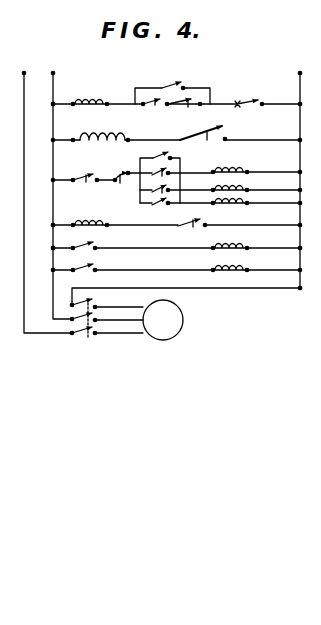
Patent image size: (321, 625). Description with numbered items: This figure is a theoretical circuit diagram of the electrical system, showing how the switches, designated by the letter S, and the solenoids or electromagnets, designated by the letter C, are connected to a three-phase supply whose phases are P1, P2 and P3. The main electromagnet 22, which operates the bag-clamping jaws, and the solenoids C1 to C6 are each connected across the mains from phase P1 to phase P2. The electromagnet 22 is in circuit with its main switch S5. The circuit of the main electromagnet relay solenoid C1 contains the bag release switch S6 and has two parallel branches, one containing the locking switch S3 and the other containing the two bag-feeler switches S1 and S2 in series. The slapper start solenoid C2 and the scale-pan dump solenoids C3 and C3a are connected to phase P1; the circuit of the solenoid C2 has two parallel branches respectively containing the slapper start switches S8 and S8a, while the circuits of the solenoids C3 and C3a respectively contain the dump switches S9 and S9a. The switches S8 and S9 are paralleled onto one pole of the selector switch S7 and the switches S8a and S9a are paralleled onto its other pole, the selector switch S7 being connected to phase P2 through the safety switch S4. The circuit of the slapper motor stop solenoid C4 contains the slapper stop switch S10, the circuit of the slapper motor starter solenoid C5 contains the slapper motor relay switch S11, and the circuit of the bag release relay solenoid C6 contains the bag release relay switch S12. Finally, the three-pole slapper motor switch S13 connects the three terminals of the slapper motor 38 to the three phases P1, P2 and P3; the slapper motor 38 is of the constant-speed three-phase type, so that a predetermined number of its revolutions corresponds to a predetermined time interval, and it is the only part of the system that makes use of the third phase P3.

The main electromagnet 22 is at (98, 130).
The slapper motor 38 is at (180, 328).
The first phase P1 is at (300, 172).
The second phase P2 is at (60, 188).
The third phase P3 is at (44, 195).
The main electromagnet relay solenoid C1 is at (90, 95).
The slapper start solenoid C2 is at (236, 207).
The scale-pan dump solenoid C3 is at (229, 165).
The scale-pan dump solenoid C3a is at (239, 188).
The slapper motor stop solenoid C4 is at (96, 229).
The slapper motor starter solenoid C5 is at (236, 247).
The bag release relay solenoid C6 is at (236, 269).
The bag-feeler switch S1 is at (151, 113).
The bag-feeler switch S2 is at (180, 113).
The locking switch S3 is at (166, 86).
The safety switch S4 is at (80, 188).
The main switch S5 is at (201, 145).
The bag release switch S6 is at (246, 99).
The selector switch S7 is at (108, 181).
The slapper start switch S8 is at (152, 158).
The slapper start switch S8a is at (153, 204).
The dump switch S9 is at (170, 172).
The dump switch S9a is at (154, 187).
The slapper stop switch S10 is at (195, 228).
The slapper motor relay switch S11 is at (92, 247).
The bag release relay switch S12 is at (92, 269).
The three-pole slapper motor switch S13 is at (82, 334).